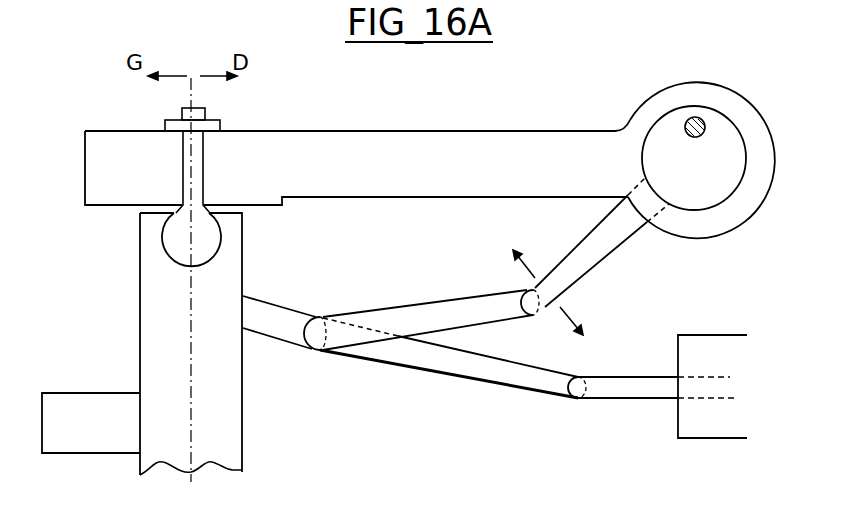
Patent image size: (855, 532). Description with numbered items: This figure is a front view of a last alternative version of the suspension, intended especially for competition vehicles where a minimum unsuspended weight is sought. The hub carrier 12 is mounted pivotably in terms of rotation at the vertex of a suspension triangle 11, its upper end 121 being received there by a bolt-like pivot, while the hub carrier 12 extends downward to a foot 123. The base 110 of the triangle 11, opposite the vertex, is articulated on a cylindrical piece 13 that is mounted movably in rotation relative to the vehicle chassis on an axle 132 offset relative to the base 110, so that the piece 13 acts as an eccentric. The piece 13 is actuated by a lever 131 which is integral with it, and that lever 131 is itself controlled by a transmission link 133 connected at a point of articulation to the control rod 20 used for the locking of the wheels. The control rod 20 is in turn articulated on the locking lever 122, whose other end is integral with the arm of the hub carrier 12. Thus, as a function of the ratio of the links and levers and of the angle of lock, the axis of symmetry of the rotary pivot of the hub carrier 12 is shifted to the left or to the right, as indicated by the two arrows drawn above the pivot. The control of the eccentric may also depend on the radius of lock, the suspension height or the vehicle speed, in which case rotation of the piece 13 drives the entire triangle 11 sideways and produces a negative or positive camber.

The suspension triangle 11 is at (475, 148).
The upper end of the hub carrier 121 is at (200, 162).
The hub carrier 12 is at (227, 432).
The support foot 123 is at (93, 438).
The locking lever 122 is at (277, 302).
The transmission link 133 is at (438, 312).
The lever 131 is at (588, 262).
The control rod 20 is at (490, 370).
The base of the suspension triangle 110 is at (653, 120).
The cylindrical piece 13 is at (708, 193).
The axle 132 is at (702, 118).